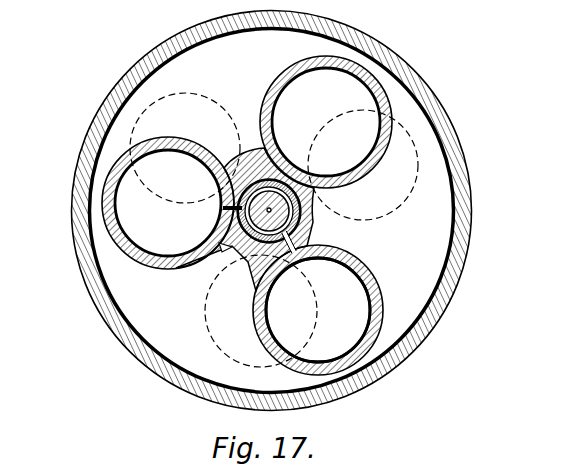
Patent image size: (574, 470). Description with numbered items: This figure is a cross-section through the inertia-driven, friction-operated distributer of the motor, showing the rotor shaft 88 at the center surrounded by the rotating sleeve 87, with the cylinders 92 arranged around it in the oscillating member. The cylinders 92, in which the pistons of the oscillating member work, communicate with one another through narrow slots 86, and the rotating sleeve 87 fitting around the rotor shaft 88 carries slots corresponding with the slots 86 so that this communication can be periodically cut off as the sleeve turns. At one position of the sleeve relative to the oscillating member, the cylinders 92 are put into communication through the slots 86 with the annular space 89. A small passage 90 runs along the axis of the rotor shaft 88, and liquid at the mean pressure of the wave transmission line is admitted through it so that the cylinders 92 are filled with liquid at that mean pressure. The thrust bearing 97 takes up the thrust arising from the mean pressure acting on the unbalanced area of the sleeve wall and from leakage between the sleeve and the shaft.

The thrust bearing 97 is at (288, 92).
The annular space 89 is at (259, 182).
The small passage 90 is at (223, 208).
The rotor shaft 88 is at (318, 222).
The rotating sleeve 87 is at (230, 247).
The narrow slots 86 is at (295, 250).
The cylinders 92 is at (357, 315).